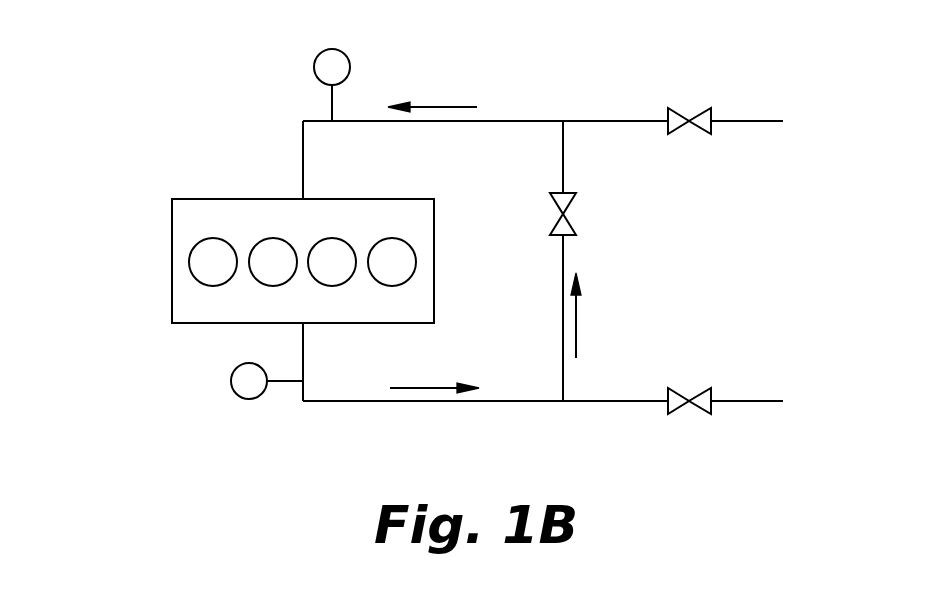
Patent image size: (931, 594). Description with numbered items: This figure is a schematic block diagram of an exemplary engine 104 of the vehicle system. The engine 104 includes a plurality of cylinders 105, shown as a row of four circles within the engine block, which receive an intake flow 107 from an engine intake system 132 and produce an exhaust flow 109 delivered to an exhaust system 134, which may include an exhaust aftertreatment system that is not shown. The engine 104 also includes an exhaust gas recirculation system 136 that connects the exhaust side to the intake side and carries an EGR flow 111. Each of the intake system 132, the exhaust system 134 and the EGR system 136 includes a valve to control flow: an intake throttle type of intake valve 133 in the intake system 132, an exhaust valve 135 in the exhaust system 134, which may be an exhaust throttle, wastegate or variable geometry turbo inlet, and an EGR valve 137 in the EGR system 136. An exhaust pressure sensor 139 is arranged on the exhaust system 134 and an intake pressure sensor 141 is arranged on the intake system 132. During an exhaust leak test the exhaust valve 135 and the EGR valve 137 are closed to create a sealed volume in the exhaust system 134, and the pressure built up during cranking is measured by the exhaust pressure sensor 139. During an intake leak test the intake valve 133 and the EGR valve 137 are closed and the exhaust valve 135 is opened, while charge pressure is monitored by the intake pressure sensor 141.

The engine 104 is at (200, 324).
The cylinders 105 is at (210, 245).
The intake flow 107 is at (433, 105).
The exhaust flow 109 is at (433, 385).
The EGR flow 111 is at (577, 323).
The engine intake system 132 is at (590, 119).
The intake valve 133 is at (692, 110).
The exhaust system 134 is at (363, 402).
The exhaust valve 135 is at (697, 390).
The exhaust gas recirculation system 136 is at (562, 272).
The EGR valve 137 is at (573, 205).
The exhaust pressure sensor 139 is at (233, 374).
The intake pressure sensor 141 is at (316, 70).